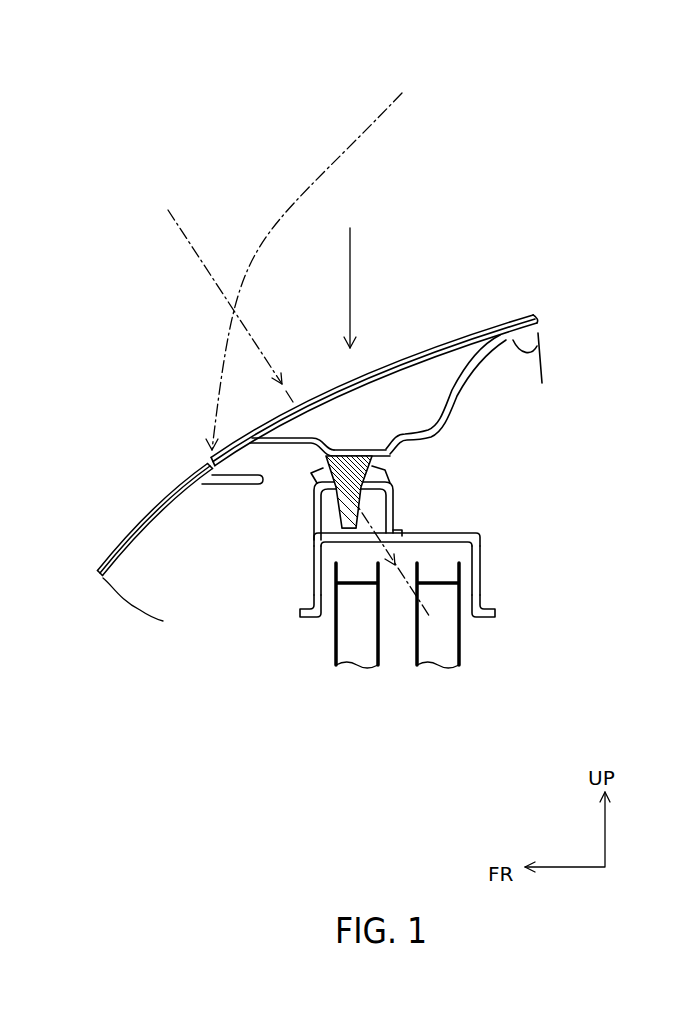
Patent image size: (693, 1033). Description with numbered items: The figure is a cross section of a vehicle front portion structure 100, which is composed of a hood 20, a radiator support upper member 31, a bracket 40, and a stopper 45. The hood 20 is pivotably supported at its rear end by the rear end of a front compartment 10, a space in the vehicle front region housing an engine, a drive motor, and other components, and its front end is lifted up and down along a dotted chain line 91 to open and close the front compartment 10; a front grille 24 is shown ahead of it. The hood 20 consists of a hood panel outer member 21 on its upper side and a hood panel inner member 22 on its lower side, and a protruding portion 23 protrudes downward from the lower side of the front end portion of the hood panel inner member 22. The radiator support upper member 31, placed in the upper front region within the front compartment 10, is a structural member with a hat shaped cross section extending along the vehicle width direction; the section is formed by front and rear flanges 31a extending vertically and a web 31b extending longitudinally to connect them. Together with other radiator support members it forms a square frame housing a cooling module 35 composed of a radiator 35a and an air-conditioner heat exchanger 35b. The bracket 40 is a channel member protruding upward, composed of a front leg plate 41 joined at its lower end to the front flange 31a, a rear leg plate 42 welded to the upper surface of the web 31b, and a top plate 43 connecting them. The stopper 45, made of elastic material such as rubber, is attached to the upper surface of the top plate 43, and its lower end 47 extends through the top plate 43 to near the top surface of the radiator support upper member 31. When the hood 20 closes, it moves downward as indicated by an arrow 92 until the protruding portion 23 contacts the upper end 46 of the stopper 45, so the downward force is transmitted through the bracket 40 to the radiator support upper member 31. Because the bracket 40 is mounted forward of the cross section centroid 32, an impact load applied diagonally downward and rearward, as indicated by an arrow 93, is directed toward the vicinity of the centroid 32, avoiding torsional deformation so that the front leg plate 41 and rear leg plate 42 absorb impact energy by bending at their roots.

The front compartment 10 is at (608, 587).
The hood 20 is at (447, 335).
The hood panel outer member 21 is at (500, 325).
The hood panel inner member 22 is at (547, 351).
The protruding portion 23 is at (384, 460).
The front grille 24 is at (143, 522).
The radiator support upper member 31 is at (426, 598).
The flanges 31a is at (310, 583).
The web 31b is at (438, 535).
The cross section centroid 32 is at (481, 568).
The cooling module 35 is at (462, 648).
The radiator 35a is at (462, 648).
The air-conditioner heat exchanger 35b is at (363, 667).
The bracket 40 is at (386, 534).
The front leg plate 41 is at (313, 511).
The rear leg plate 42 is at (397, 518).
The top plate 43 is at (397, 498).
The stopper 45 is at (312, 478).
The upper end 46 is at (316, 459).
The lower end 47 is at (313, 531).
The dotted chain line 91 is at (353, 132).
The arrow 92 is at (353, 274).
The arrow 93 is at (245, 325).
The vehicle front portion structure 100 is at (157, 157).